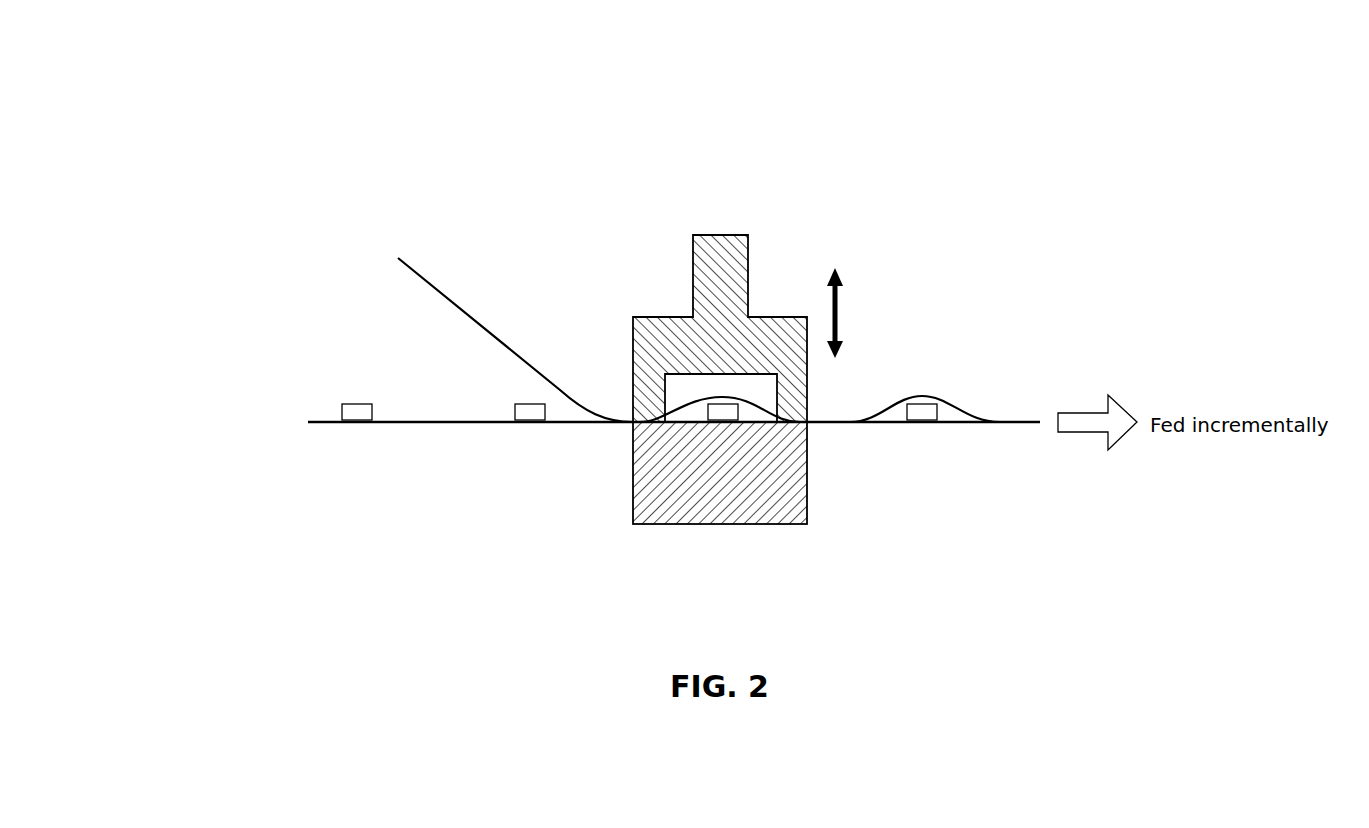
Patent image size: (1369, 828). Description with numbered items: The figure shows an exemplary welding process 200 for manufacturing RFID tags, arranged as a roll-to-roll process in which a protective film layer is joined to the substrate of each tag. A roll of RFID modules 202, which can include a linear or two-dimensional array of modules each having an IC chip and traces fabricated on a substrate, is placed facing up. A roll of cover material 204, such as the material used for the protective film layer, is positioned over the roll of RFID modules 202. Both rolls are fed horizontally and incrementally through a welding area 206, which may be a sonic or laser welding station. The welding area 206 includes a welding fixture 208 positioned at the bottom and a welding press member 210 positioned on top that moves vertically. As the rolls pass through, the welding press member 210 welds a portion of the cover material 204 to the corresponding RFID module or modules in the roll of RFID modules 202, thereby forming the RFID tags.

The welding process 200 is at (225, 121).
The roll of RFID modules 202 is at (300, 422).
The roll of cover material 204 is at (390, 260).
The welding area 206 is at (790, 428).
The welding fixture 208 is at (809, 497).
The welding press member 210 is at (630, 316).